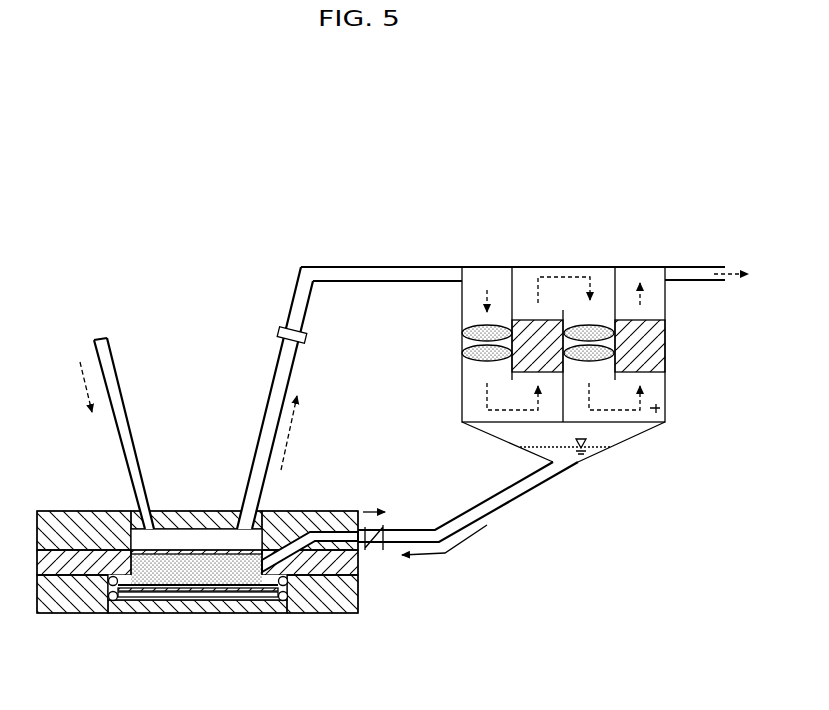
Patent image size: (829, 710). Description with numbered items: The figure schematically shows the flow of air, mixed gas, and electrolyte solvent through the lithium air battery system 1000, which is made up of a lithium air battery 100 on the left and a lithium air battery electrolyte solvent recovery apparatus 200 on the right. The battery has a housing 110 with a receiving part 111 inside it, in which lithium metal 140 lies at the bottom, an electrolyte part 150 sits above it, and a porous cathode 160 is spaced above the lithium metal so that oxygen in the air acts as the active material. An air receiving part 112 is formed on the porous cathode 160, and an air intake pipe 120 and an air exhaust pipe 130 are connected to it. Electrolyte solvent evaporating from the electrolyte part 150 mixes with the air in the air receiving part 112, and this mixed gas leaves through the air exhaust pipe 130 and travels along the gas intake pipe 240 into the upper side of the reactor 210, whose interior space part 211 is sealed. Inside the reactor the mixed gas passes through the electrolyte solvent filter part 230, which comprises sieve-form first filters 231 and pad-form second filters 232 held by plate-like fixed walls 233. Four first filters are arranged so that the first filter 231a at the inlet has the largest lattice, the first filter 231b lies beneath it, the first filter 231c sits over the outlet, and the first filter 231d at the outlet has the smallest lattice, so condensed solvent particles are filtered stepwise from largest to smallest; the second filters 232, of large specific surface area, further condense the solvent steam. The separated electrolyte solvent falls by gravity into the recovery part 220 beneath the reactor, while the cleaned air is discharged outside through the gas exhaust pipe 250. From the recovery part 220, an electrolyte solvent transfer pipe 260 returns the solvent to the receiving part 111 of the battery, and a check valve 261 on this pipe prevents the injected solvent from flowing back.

The lithium air battery system 1000 is at (151, 188).
The lithium air battery 100 is at (58, 366).
The housing 110 is at (76, 585).
The receiving part 111 is at (143, 613).
The air receiving part 112 is at (250, 541).
The air intake pipe 120 is at (117, 447).
The air exhaust pipe 130 is at (277, 370).
The lithium metal 140 is at (250, 613).
The electrolyte part 150 is at (232, 600).
The porous cathode 160 is at (190, 545).
The lithium air battery electrolyte solvent recovery apparatus 200 is at (437, 168).
The reactor 210 is at (667, 394).
The space part 211 is at (660, 411).
The recovery part 220 is at (632, 438).
The electrolyte solvent filter part 230 is at (753, 151).
The first filter 231 is at (612, 222).
The first filter 231a is at (478, 323).
The first filter 231b is at (495, 352).
The first filter 231c is at (583, 325).
The first filter 231d is at (600, 350).
The second filter 232 is at (642, 342).
The fixed walls 233 is at (617, 290).
The gas intake pipe 240 is at (366, 265).
The gas exhaust pipe 250 is at (717, 267).
The electrolyte solvent transfer pipe 260 is at (522, 490).
The check valve 261 is at (373, 504).